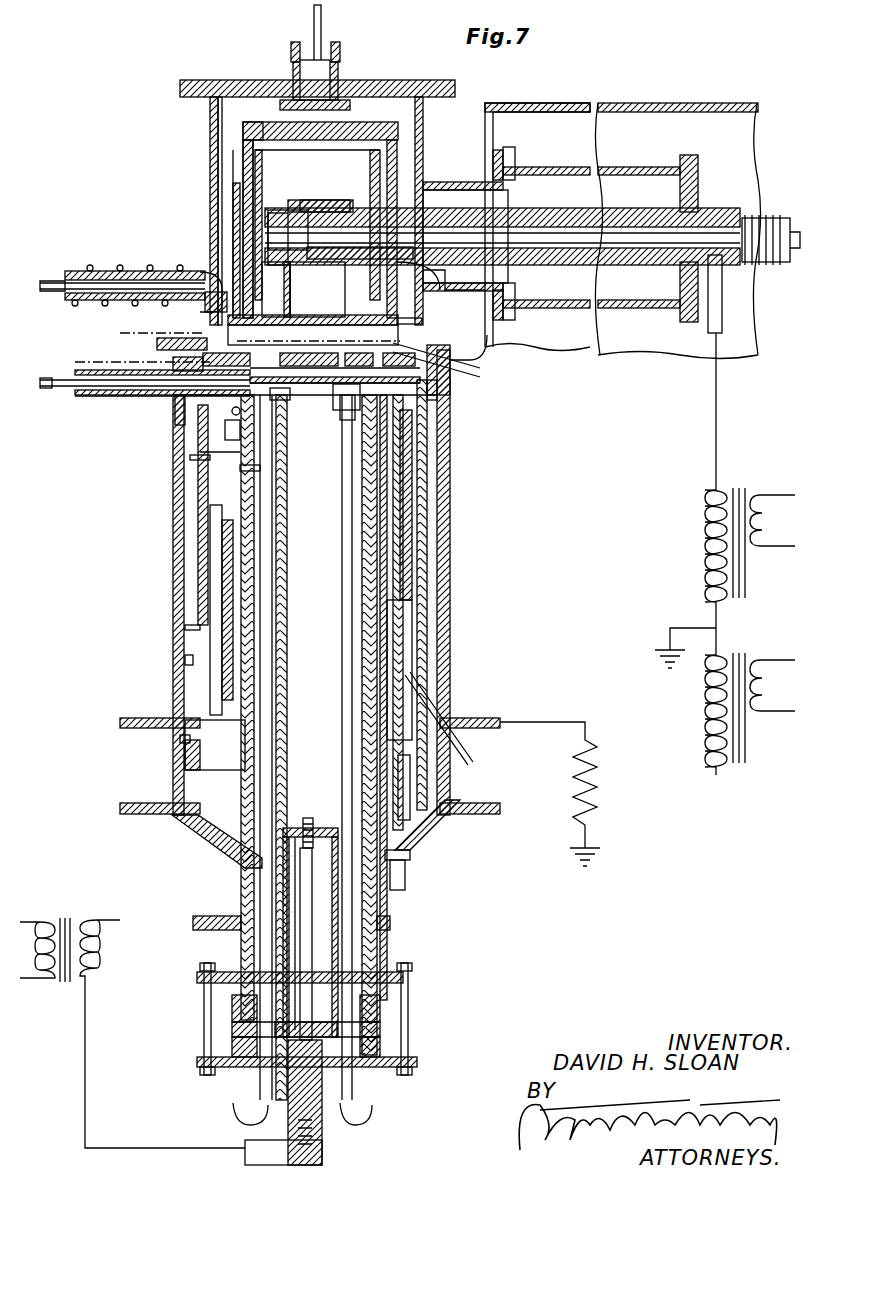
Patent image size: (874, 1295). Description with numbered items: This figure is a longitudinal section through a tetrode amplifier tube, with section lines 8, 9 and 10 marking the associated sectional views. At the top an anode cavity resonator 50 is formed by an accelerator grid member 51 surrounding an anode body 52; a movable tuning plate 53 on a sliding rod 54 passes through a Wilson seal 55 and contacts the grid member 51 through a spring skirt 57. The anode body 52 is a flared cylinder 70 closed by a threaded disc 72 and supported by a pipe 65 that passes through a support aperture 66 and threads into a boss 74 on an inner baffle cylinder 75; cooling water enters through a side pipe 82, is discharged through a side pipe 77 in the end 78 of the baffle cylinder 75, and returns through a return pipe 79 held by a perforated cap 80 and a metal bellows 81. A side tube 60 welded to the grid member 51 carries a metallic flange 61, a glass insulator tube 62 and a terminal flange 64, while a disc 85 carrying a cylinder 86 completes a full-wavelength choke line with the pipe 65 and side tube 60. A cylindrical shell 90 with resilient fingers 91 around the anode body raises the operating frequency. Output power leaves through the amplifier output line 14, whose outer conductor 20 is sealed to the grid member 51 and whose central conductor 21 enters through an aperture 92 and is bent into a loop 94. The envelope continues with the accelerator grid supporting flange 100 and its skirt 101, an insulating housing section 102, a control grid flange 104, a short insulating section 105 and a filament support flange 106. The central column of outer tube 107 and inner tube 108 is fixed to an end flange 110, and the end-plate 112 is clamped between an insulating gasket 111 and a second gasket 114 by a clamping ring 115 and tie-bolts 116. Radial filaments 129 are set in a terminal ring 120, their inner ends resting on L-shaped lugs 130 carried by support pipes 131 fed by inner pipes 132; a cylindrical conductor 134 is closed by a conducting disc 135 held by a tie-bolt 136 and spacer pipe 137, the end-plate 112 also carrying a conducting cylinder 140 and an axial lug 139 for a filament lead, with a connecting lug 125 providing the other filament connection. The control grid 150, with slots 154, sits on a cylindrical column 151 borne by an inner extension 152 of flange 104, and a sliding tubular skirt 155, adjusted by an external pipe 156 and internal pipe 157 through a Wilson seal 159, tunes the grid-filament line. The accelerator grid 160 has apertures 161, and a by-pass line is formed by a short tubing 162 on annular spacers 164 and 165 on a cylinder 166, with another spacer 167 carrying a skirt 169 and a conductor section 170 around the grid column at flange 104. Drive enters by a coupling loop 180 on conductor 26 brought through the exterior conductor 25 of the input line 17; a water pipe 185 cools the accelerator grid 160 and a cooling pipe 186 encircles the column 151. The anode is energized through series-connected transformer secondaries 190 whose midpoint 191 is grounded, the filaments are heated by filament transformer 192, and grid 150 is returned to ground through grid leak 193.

The section line 8- 8 is at (200, 920).
The section line 9- 9 is at (92, 345).
The section line 10- 10 is at (138, 308).
The amplifier output line 14 is at (60, 300).
The amplifier input line 17 is at (74, 400).
The outer conductor 20 is at (88, 268).
The central conductor 21 is at (50, 281).
The exterior conductor 25 is at (62, 372).
The conductor 26 is at (58, 390).
The anode cavity resonator 50 is at (238, 107).
The accelerator grid member 51 is at (215, 172).
The anode body 52 is at (230, 194).
The movable plate 53 is at (348, 103).
The sliding rod 54 is at (322, 30).
The Wilson seal 55 is at (293, 63).
The spring skirt 57 is at (330, 78).
The side tube 60 is at (428, 182).
The metallic flange 61 is at (506, 160).
The glass insulator tube 62 is at (630, 167).
The terminal flange 64 is at (697, 155).
The pipe 65 is at (708, 208).
The support aperture 66 is at (442, 270).
The flared cylinder 70 is at (248, 135).
The threaded disc 72 is at (258, 125).
The boss 74 is at (368, 190).
The inner baffle cylinder 75 is at (282, 172).
The side pipe 77 is at (328, 299).
The end 78 is at (275, 312).
The return pipe 79 is at (285, 215).
The perforated cap 80 is at (325, 200).
The metal bellows 81 is at (768, 212).
The side pipe 82 is at (722, 303).
The disc 85 is at (485, 112).
The cylinder 86 is at (630, 105).
The cylindrical shell 90 is at (240, 218).
The resilient fingers 91 is at (233, 156).
The aperture 92 is at (205, 314).
The loop 94 is at (222, 265).
The accelerator grid supporting flange 100 is at (172, 347).
The skirt 101 is at (175, 402).
The insulating cylindrical housing section 102 is at (175, 549).
The control grid flange 104 is at (148, 718).
The short insulating section 105 is at (180, 761).
The filament support flange 106 is at (163, 805).
The outer tube 107 is at (248, 857).
The inner tube 108 is at (262, 877).
The end flange 110 is at (205, 978).
The insulating gasket 111 is at (238, 1006).
The end-plate 112 is at (235, 1031).
The second gasket 114 is at (235, 1046).
The clamping ring 115 is at (218, 1068).
The tie-bolts 116 is at (200, 1016).
The terminal ring 120 is at (240, 432).
The connecting lug 125 is at (205, 928).
The filaments 129 is at (430, 426).
The L-shaped lugs 130 is at (340, 420).
The support pipes 131 is at (345, 628).
The inner pipe 132 is at (350, 503).
The cylindrical conductor 134 is at (382, 652).
The conducting disc 135 is at (292, 833).
The tie-bolt 136 is at (315, 832).
The spacer pipe 137 is at (280, 893).
The axial lug 139 is at (324, 1138).
The conducting cylinder 140 is at (362, 952).
The grid 150 is at (398, 404).
The cylindrical column 151 is at (212, 487).
The inner extension 152 is at (195, 690).
The slots 154 is at (455, 420).
The tubular skirt 155 is at (442, 622).
The external pipe 156 is at (400, 836).
The internal pipe 157 is at (415, 782).
The Wilson seal 159 is at (410, 860).
The accelerator grid 160 is at (430, 386).
The apertures 161 is at (400, 331).
The short length of tubing 162 is at (116, 466).
The annular spacer 164 is at (185, 362).
The annular spacer 165 is at (260, 470).
The cylinder 166 is at (232, 452).
The annular spacer 167 is at (185, 627).
The upwardly extending skirt 169 is at (200, 512).
The short cylindrical section of conductor 170 is at (185, 662).
The coupling loop 180 is at (233, 414).
The water pipe 185 is at (490, 352).
The cooling pipe 186 is at (467, 758).
The transformer secondaries 190 is at (705, 552).
The midpoint 191 is at (712, 628).
The filament transformer 192 is at (132, 1010).
The grid leak 193 is at (590, 788).